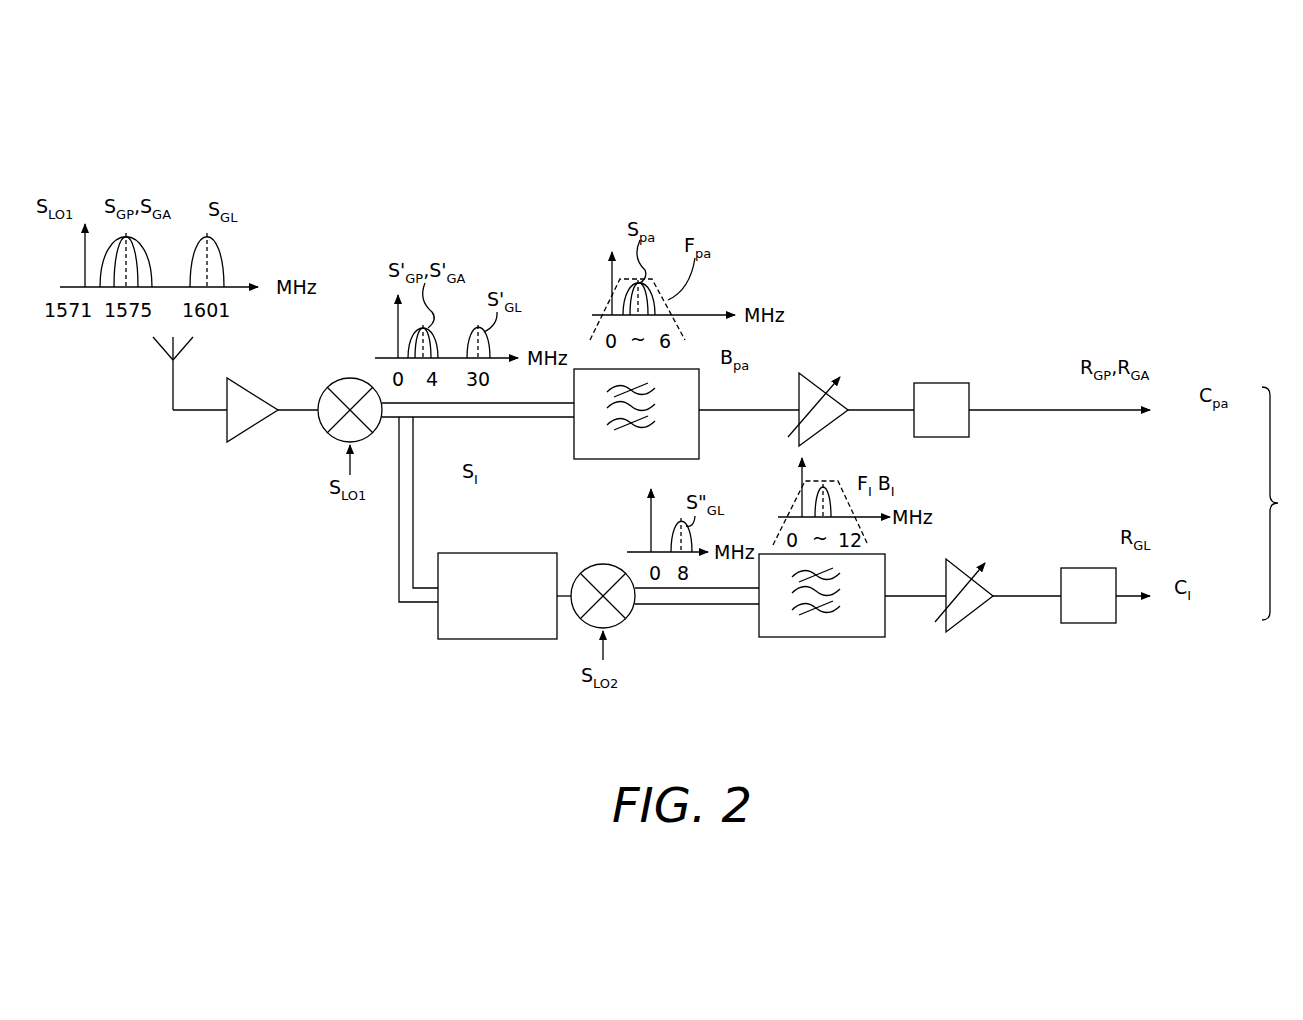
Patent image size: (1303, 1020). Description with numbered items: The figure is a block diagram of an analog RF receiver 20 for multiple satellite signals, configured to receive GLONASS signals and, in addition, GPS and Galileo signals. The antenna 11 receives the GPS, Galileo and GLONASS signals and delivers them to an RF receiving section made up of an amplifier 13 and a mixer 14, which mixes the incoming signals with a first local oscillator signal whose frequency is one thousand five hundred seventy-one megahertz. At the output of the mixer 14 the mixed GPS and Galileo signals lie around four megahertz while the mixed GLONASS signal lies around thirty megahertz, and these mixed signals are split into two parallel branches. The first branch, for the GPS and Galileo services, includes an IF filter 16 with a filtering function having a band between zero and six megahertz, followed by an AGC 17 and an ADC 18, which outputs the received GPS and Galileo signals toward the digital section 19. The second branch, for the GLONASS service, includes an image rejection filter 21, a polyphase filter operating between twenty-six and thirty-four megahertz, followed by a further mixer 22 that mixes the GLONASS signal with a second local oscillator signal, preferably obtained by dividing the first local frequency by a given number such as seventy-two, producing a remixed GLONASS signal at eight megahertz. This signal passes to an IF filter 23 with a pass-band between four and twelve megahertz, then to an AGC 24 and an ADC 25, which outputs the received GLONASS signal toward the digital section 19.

The antenna 11 is at (160, 373).
The amplifier 13 is at (237, 425).
The mixer 14 is at (350, 390).
The IF filter 16 is at (688, 425).
The AGC 17 is at (805, 385).
The ADC 18 is at (942, 383).
The digital section 19 is at (1282, 503).
The analog RF receiver 20 is at (481, 200).
The image rejection filter 21 is at (520, 560).
The further mixer 22 is at (600, 580).
The IF filter 23 is at (812, 627).
The AGC 24 is at (965, 604).
The ADC 25 is at (1087, 608).